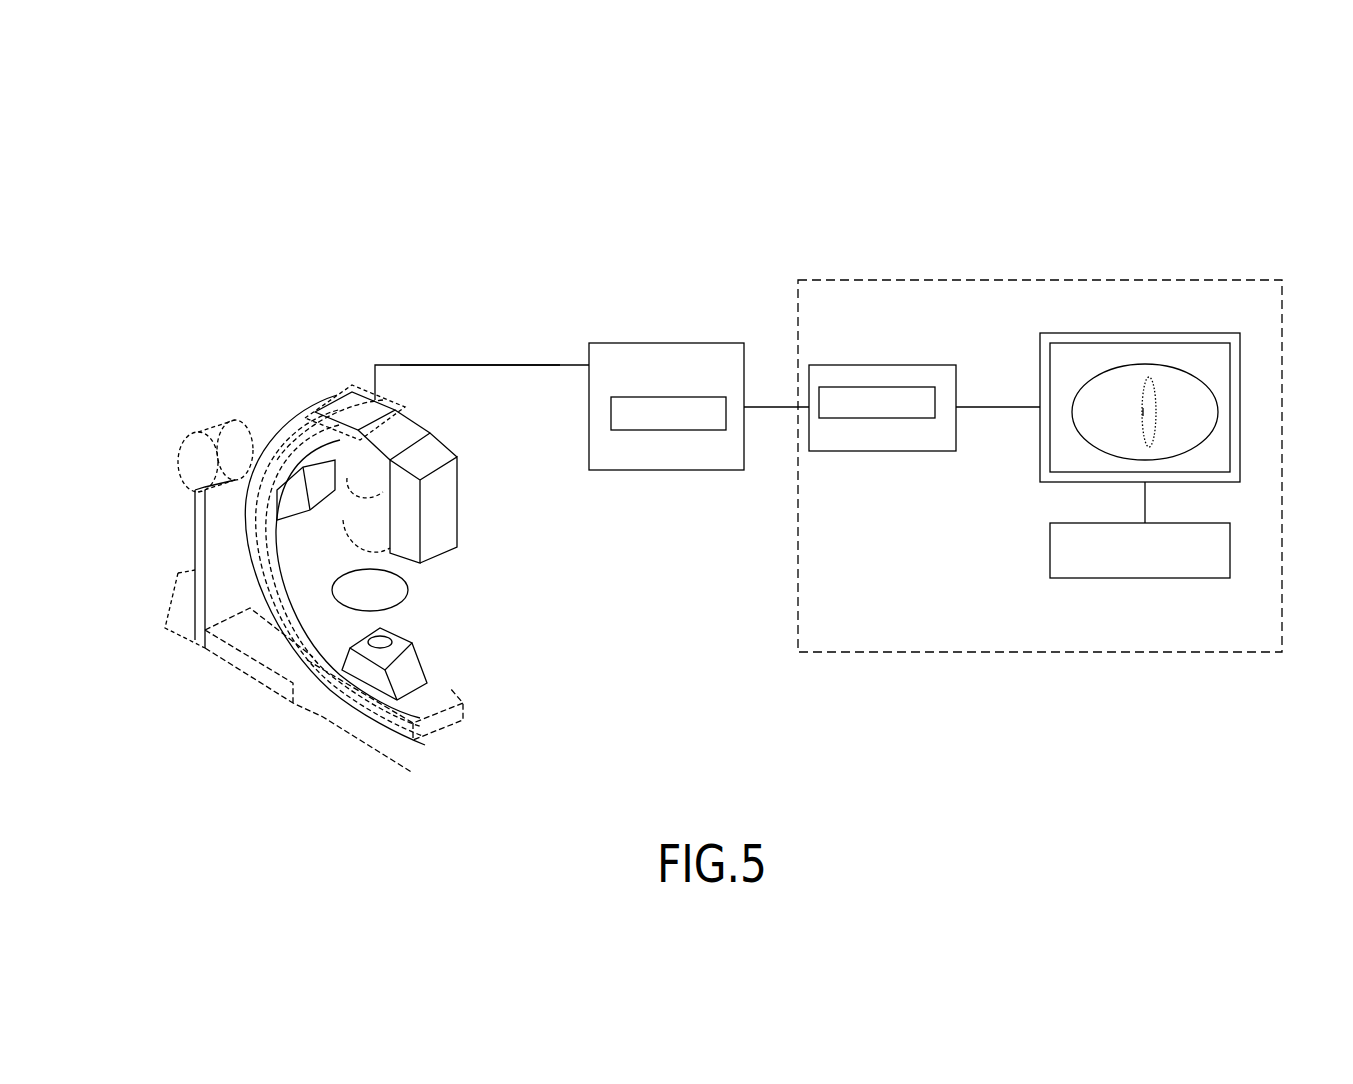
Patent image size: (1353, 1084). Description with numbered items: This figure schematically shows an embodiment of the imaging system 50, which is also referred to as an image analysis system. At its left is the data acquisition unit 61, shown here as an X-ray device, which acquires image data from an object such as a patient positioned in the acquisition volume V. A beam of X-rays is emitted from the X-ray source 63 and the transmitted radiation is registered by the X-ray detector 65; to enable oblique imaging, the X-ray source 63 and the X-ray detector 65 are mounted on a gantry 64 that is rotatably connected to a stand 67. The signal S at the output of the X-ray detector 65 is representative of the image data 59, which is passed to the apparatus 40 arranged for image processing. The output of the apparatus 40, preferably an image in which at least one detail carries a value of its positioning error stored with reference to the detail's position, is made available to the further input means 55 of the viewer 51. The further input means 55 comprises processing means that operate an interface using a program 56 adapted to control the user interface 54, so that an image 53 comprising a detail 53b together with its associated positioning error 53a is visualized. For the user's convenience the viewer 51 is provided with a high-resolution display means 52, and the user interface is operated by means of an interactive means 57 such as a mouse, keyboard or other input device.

The imaging system 50 is at (584, 203).
The signal S is at (486, 365).
The apparatus 40 is at (655, 470).
The image data 59 is at (705, 430).
The viewer 51 is at (1038, 280).
The further input means 55 is at (853, 451).
The program 56 is at (892, 418).
The high-resolution display means 52 is at (1240, 340).
The user interface 54 is at (1230, 380).
The image 53 is at (1085, 430).
The positioning error 53a is at (1143, 425).
The detail 53b is at (1155, 418).
The interactive means 57 is at (1050, 556).
The data acquisition unit 61 is at (190, 395).
The gantry 64 is at (297, 625).
The X-ray detector 65 is at (378, 483).
The X-ray source 63 is at (407, 662).
The stand 67 is at (187, 623).
The acquisition volume V is at (408, 590).